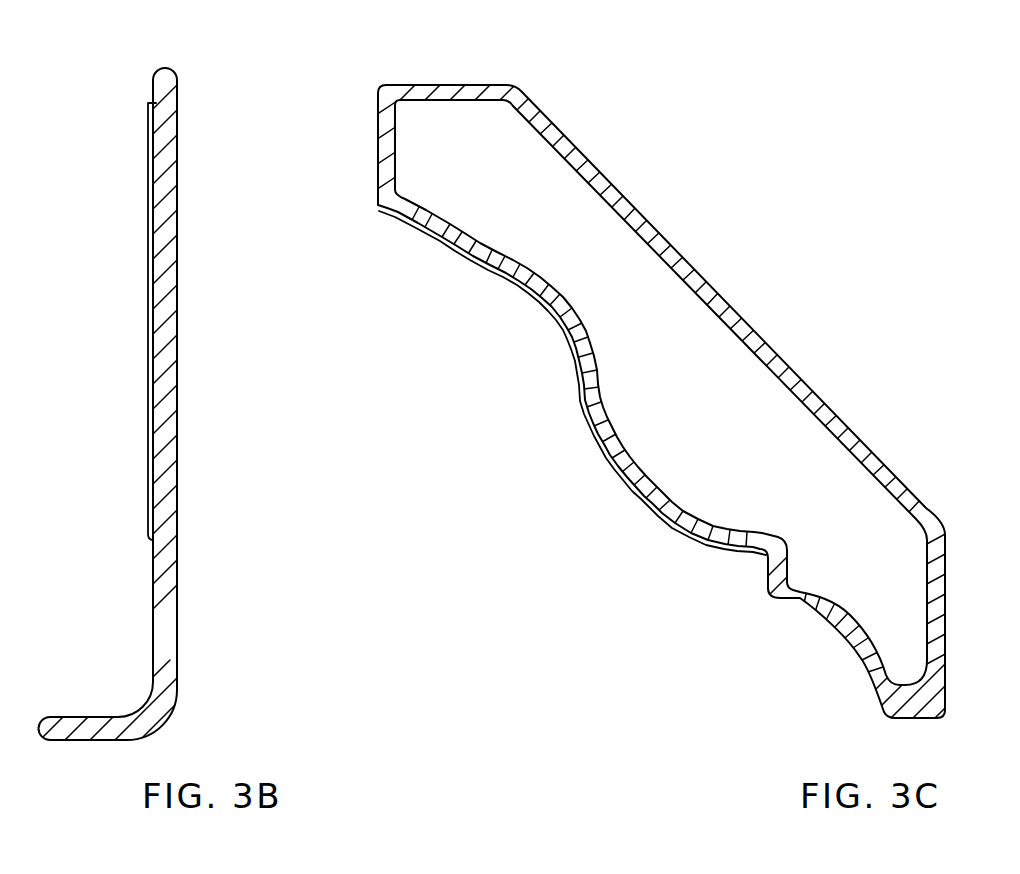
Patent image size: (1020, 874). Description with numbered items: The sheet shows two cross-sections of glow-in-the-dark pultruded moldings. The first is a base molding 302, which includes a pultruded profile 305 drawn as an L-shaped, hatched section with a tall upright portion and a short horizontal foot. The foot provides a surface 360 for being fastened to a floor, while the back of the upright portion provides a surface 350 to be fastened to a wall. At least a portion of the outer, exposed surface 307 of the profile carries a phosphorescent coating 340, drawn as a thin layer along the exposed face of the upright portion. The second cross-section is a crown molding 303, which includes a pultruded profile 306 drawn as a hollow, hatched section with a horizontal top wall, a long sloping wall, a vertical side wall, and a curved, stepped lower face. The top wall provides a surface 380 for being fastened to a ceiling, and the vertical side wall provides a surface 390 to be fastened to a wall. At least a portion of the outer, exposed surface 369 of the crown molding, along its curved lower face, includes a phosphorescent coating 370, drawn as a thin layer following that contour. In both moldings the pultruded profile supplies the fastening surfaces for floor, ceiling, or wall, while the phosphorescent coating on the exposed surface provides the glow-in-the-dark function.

In FIG. 3B, the glow-in-the-dark pultruded base molding 302 is at (225, 414).
In FIG. 3B, the pultruded profile 305 is at (167, 483).
In FIG. 3B, the phosphorescent coating 340 is at (147, 488).
In FIG. 3B, the outer, exposed surface 307 is at (150, 553).
In FIG. 3B, the surface to be fastened to a wall 350 is at (175, 585).
In FIG. 3B, the surface for being fastened to a floor 360 is at (103, 742).
In FIG. 3C, the glow-in-the-dark pultruded crown molding 303 is at (781, 240).
In FIG. 3C, the surface for being fastened to a ceiling 380 is at (442, 85).
In FIG. 3C, the pultruded profile 306 is at (782, 365).
In FIG. 3C, the surface to be fastened to a wall 390 is at (945, 610).
In FIG. 3C, the phosphorescent coating 370 is at (658, 520).
In FIG. 3C, the outer, exposed surface 369 is at (768, 585).